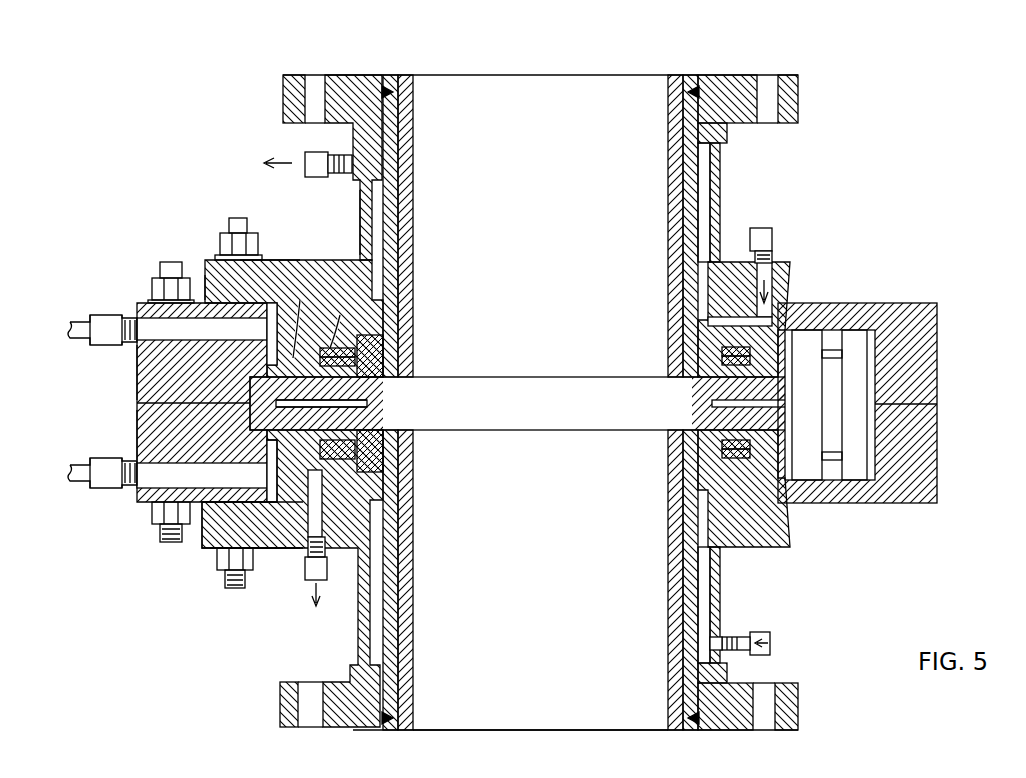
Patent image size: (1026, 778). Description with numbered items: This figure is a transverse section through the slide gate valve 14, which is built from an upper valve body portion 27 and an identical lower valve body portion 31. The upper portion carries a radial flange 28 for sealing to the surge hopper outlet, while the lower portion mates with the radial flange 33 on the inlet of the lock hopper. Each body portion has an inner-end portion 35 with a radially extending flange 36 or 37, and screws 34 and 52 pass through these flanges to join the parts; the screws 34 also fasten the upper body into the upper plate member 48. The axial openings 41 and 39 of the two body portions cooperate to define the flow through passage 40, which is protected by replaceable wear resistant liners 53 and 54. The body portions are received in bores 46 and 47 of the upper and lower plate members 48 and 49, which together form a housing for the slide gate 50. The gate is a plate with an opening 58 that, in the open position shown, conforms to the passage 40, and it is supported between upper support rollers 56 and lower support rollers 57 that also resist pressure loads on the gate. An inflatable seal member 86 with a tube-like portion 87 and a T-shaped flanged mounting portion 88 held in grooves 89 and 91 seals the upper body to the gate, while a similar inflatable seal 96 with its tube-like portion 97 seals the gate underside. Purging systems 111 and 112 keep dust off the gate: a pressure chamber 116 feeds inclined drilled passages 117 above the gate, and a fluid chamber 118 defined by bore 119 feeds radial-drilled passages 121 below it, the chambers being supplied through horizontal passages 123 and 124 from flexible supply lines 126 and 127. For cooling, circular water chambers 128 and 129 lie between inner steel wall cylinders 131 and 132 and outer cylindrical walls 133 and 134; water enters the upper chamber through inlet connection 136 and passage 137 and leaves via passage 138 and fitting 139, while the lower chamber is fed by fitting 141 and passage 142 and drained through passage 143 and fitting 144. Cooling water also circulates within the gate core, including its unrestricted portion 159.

The valve 14 is at (217, 287).
The upper valve body portion 27 is at (350, 208).
The radial flange 28 is at (798, 105).
The lower valve body portion 31 is at (730, 597).
The radial flange 33 is at (798, 697).
The screws 34 is at (238, 218).
The inner-end portion 35 is at (758, 260).
The radially extending flange 36 is at (210, 262).
The radially extending flange 37 is at (205, 537).
The axial opening 39 is at (420, 732).
The flow through passage 40 is at (537, 98).
The axial opening 41 is at (430, 74).
The bore 46 is at (270, 272).
The bore 47 is at (292, 578).
The upper plate member 48 is at (137, 369).
The lower plate member 49 is at (137, 411).
The slide gate 50 is at (388, 385).
The screws 52 is at (235, 580).
The wear resistant liner 53 is at (413, 240).
The wear resistant liner 54 is at (413, 572).
The upper support rollers 56 is at (820, 330).
The lower support rollers 57 is at (808, 492).
The opening 58 is at (690, 386).
The inflatable seal member 86 is at (385, 360).
The inflatable tube-like portion 87 is at (321, 389).
The flanged mounting portion 88 is at (355, 350).
The circular groove 89 is at (330, 321).
The circular groove 91 is at (355, 360).
The inflatable seal 96 is at (395, 455).
The inflatable tube-like portion 97 is at (321, 416).
The purging system 111 is at (272, 366).
The purging system 112 is at (332, 503).
The pressure chamber 116 is at (265, 328).
The drilled passages 117 is at (300, 300).
The fluid chamber 118 is at (265, 474).
The bore 119 is at (255, 527).
The radial-drilled passages 121 is at (243, 466).
The horizontal passage 123 is at (166, 371).
The horizontal passage 124 is at (159, 435).
The flexible supply line 126 is at (68, 330).
The flexible supply line 127 is at (68, 474).
The circular water chamber 128 is at (703, 185).
The circular water chamber 129 is at (700, 572).
The inner steel wall cylinder 131 is at (690, 216).
The inner steel wall cylinder 132 is at (690, 510).
The outer cylindrical wall 133 is at (718, 208).
The outer cylindrical wall 134 is at (718, 614).
The inlet connection 136 is at (775, 242).
The passage 137 is at (757, 325).
The passage 138 is at (345, 165).
The fitting 139 is at (305, 157).
The fitting 141 is at (775, 645).
The passage 142 is at (712, 643).
The passage 143 is at (395, 478).
The fitting 144 is at (310, 583).
The unrestricted portion 159 is at (385, 413).